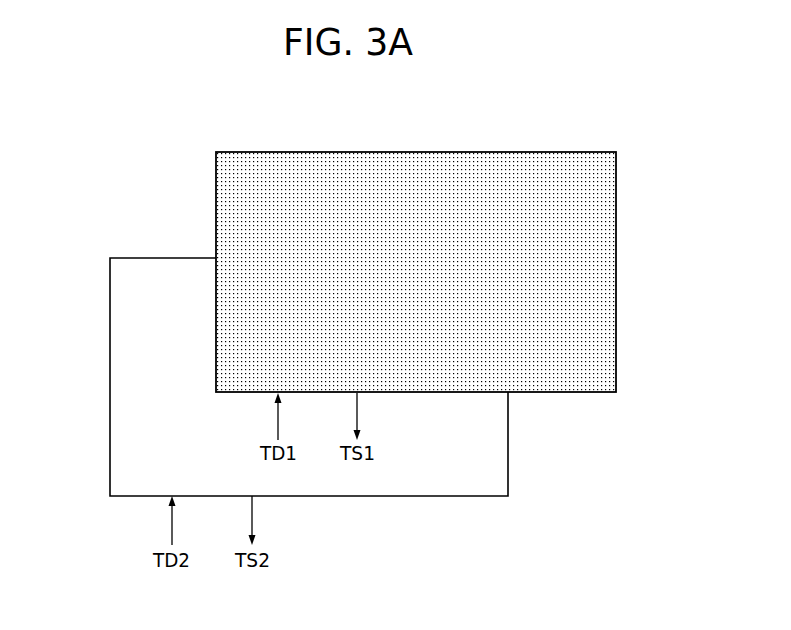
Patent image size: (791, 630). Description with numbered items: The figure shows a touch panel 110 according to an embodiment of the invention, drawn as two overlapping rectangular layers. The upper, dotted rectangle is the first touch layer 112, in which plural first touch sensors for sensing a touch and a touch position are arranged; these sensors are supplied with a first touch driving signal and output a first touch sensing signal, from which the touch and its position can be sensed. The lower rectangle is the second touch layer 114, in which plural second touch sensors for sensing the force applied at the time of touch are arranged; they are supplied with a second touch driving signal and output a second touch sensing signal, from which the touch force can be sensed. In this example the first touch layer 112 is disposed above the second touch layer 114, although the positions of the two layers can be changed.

The touch panel 110 is at (364, 115).
The first touch layer 112 is at (616, 272).
The second touch layer 114 is at (110, 392).